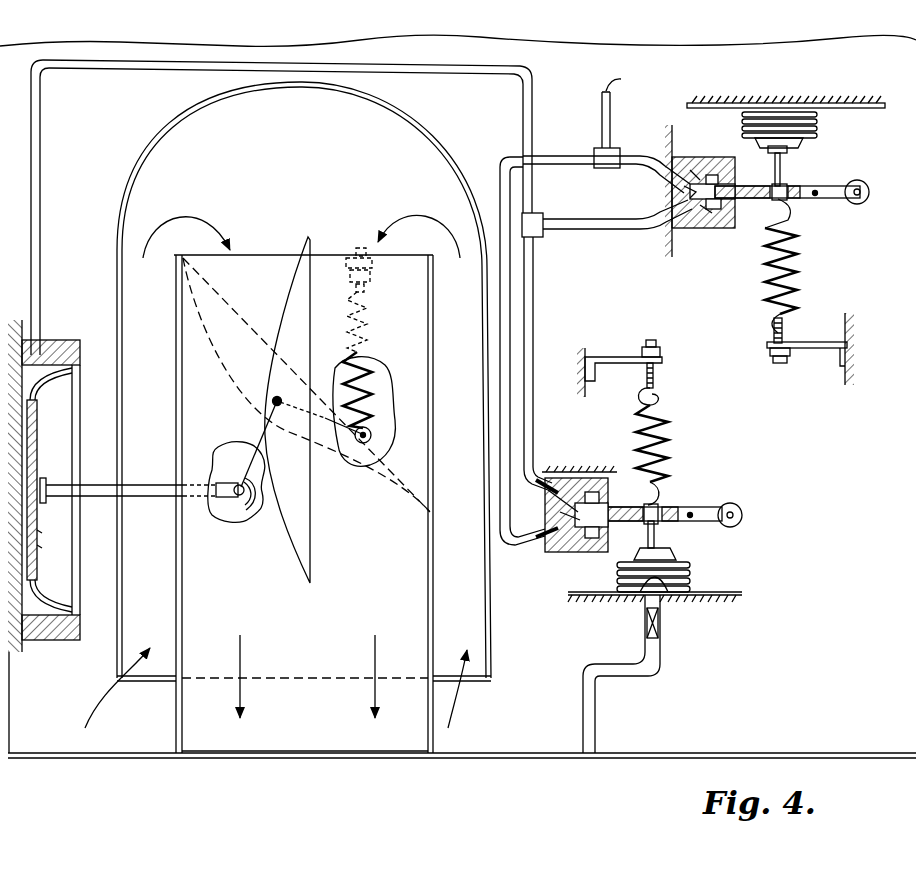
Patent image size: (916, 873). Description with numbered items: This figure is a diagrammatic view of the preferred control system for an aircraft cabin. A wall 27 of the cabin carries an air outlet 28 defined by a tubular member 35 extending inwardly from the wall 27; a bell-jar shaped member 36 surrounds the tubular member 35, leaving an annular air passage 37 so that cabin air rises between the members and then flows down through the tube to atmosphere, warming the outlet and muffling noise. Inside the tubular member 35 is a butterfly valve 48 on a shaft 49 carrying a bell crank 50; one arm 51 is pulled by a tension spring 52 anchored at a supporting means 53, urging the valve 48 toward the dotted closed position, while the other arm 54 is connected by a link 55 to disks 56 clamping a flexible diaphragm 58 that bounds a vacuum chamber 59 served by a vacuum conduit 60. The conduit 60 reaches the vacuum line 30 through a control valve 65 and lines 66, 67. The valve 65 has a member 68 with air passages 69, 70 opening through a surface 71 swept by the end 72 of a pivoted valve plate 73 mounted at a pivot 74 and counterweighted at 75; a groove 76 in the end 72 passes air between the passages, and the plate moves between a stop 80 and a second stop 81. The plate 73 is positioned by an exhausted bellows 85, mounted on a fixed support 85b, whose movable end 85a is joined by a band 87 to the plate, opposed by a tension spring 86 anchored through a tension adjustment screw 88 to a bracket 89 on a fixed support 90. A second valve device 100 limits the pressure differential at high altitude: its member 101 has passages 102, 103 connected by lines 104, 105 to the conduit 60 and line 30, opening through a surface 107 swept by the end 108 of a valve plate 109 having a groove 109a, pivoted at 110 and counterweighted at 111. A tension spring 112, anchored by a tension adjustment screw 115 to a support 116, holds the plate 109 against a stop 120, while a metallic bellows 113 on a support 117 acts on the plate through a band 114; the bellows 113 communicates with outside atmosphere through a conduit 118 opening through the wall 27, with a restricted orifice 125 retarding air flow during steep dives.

The wall of the cabin structure 27 is at (110, 758).
The air outlet 28 is at (263, 756).
The vacuum line 30 is at (603, 106).
The tubular member 35 is at (435, 560).
The bell-jar shaped member 36 is at (145, 166).
The annular air passage 37 is at (143, 330).
The valve 48 is at (288, 282).
The shaft 49 is at (272, 401).
The bell crank 50 is at (236, 456).
The arm of bell crank 51 is at (346, 445).
The tension spring 52 is at (380, 364).
The supporting means 53 is at (356, 250).
The arm of bell crank 54 is at (258, 512).
The link 55 is at (97, 486).
The disks 56 is at (42, 547).
The flexible diaphragm 58 is at (40, 588).
The vacuum chamber 59 is at (41, 616).
The vacuum conduit 60 is at (58, 235).
The control valve 65 is at (706, 232).
The line 66 is at (668, 150).
The line 67 is at (576, 231).
The member 68 is at (672, 192).
The air passage 69 is at (688, 170).
The air passage 70 is at (705, 228).
The surface 71 is at (718, 238).
The end of valve plate 72 is at (722, 172).
The valve plate 73 is at (745, 186).
The pivot 74 is at (820, 199).
The counterweight 75 is at (867, 186).
The air passage groove 76 is at (730, 222).
The stop 80 is at (770, 160).
The second stop 81 is at (733, 210).
The aneroid device 85 is at (819, 120).
The movable end of bellows 85a is at (804, 143).
The fixed support 85b is at (888, 102).
The tension spring 86 is at (799, 264).
The band 87 is at (781, 172).
The tension adjustment screw 88 is at (784, 328).
The bracket 89 is at (796, 350).
The fixed support 90 is at (838, 332).
The valve device 100 is at (542, 562).
The member 101 is at (548, 513).
The air passage 102 is at (582, 492).
The air passage 103 is at (562, 545).
The line 104 is at (536, 432).
The line 105 is at (507, 158).
The surface 107 is at (601, 554).
The end of valve plate 108 is at (592, 480).
The valve plate 109 is at (622, 513).
The groove 109a is at (626, 525).
The pivot 110 is at (690, 512).
The counterweight 111 is at (734, 506).
The tension spring 112 is at (660, 443).
The metallic bellows 113 is at (684, 566).
The band 114 is at (656, 542).
The tension adjustment screw 115 is at (655, 378).
The support 116 is at (638, 354).
The support 117 is at (718, 594).
The conduit 118 is at (661, 669).
The stop 120 is at (592, 474).
The restricted orifice 125 is at (661, 625).